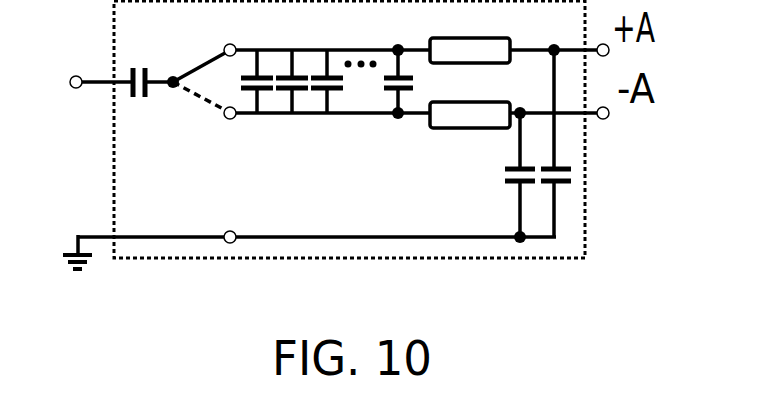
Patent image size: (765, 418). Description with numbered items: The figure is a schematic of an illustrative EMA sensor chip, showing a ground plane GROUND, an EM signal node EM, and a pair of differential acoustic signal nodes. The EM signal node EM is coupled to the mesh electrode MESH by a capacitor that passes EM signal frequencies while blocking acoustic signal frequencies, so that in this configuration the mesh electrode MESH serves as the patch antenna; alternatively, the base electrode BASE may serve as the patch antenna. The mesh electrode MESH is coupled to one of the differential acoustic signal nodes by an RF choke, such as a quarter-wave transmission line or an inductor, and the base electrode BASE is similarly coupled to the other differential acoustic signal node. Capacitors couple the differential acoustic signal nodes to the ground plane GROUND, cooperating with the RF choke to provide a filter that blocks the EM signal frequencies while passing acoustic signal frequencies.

The EM signal node EM is at (131, 74).
The mesh electrode MESH is at (416, 34).
The base electrode BASE is at (416, 132).
The ground plane GROUND is at (309, 228).